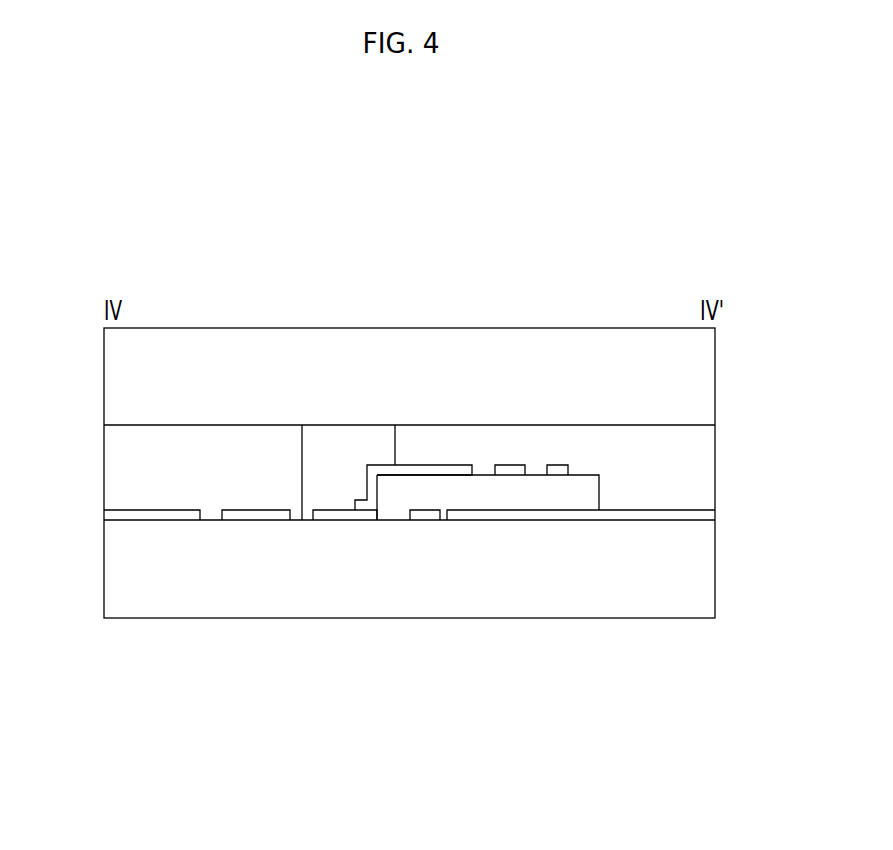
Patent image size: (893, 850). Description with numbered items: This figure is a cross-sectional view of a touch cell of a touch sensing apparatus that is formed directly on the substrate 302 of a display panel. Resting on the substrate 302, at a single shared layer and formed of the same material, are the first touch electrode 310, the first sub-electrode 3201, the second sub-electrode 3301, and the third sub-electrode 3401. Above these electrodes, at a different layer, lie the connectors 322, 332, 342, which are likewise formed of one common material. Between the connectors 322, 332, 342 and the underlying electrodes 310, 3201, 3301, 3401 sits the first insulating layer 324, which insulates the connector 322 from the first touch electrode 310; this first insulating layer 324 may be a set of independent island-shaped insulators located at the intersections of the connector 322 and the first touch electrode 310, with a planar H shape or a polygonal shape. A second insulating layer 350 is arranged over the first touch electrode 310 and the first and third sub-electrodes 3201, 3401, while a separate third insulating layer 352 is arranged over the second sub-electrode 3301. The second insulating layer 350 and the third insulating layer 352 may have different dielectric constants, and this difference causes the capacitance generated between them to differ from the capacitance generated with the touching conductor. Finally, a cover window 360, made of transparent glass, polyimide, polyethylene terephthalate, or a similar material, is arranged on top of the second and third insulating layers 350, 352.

The substrate 302 is at (104, 563).
The first touch electrode 310 is at (525, 520).
The first sub-electrode 3201 is at (152, 520).
The second sub-electrode 3301 is at (343, 520).
The third sub-electrode 3401 is at (255, 520).
The first insulating layer 324 is at (599, 493).
The connector 332 is at (441, 465).
The connector 322 is at (510, 465).
The connector 342 is at (556, 465).
The second insulating layer 350 is at (104, 463).
The third insulating layer 352 is at (301, 448).
The cover window 360 is at (104, 372).